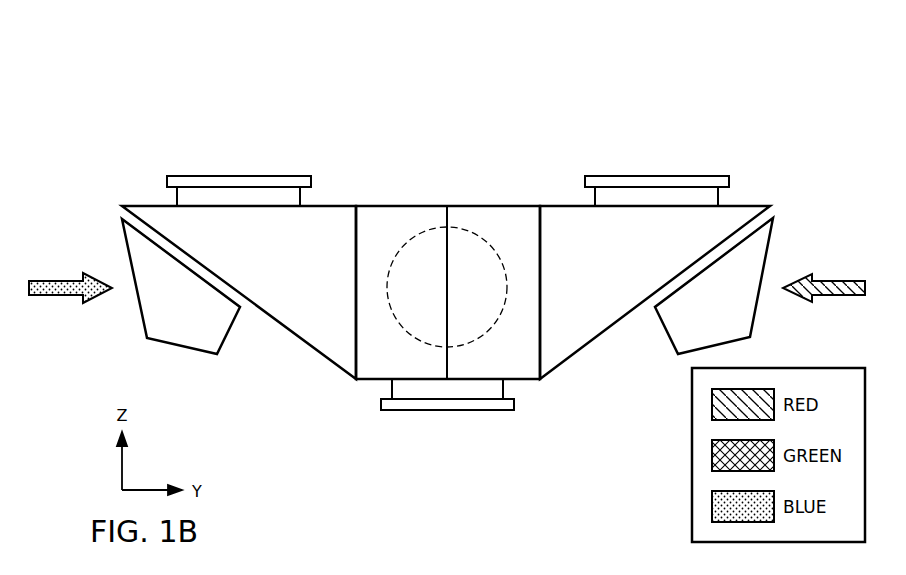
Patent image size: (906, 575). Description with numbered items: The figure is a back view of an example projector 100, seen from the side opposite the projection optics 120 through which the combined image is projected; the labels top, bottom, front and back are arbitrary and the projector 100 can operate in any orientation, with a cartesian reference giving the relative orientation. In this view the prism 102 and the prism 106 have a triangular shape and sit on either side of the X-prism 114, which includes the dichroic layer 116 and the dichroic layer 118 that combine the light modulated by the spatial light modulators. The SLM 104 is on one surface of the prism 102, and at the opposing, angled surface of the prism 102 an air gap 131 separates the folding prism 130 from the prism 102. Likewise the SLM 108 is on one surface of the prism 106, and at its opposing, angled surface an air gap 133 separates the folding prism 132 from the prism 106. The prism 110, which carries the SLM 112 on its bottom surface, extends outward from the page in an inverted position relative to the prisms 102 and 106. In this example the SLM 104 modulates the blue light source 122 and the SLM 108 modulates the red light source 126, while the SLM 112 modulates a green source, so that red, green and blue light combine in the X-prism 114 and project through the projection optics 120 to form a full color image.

The projector 100 is at (672, 82).
The prism 102 is at (327, 215).
The SLM 104 is at (237, 176).
The prism 106 is at (568, 212).
The SLM 108 is at (655, 176).
The prism 110 is at (541, 279).
The SLM 112 is at (447, 411).
The X-prism 114 is at (493, 213).
The dichroic layer 116 is at (357, 291).
The dichroic layer 118 is at (530, 308).
The projection optics 120 is at (420, 230).
The blue light source 122 is at (58, 280).
The red light source 126 is at (832, 280).
The folding prism 130 is at (233, 331).
The air gap 131 is at (126, 215).
The folding prism 132 is at (666, 331).
The air gap 133 is at (770, 215).